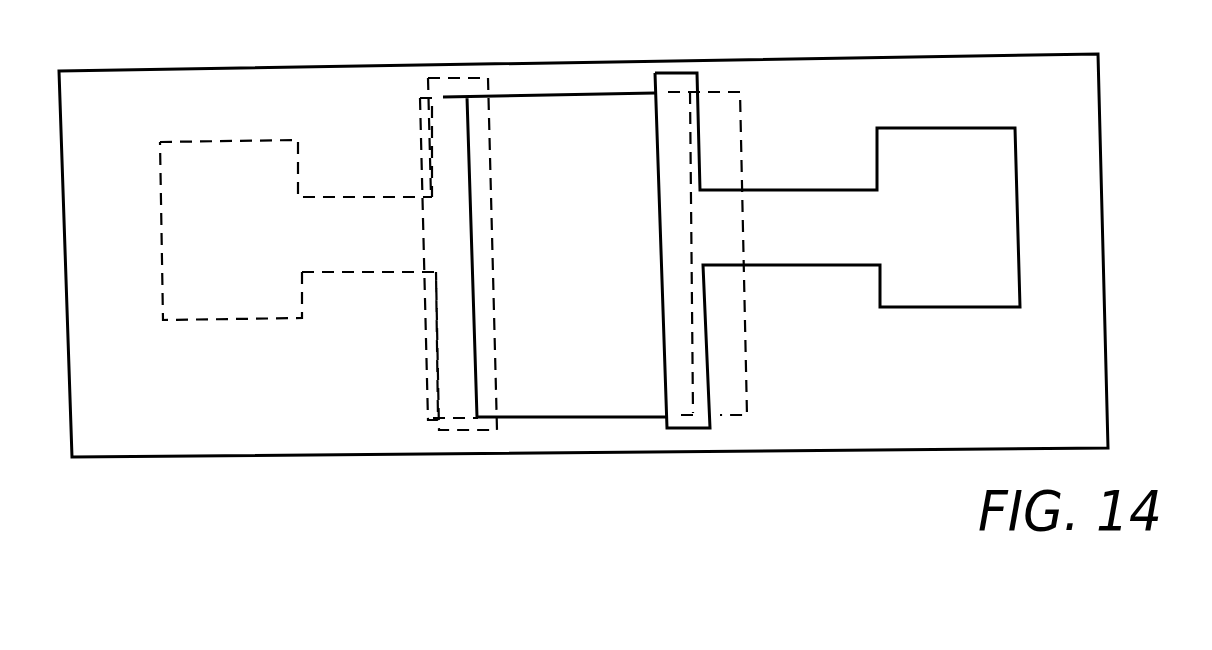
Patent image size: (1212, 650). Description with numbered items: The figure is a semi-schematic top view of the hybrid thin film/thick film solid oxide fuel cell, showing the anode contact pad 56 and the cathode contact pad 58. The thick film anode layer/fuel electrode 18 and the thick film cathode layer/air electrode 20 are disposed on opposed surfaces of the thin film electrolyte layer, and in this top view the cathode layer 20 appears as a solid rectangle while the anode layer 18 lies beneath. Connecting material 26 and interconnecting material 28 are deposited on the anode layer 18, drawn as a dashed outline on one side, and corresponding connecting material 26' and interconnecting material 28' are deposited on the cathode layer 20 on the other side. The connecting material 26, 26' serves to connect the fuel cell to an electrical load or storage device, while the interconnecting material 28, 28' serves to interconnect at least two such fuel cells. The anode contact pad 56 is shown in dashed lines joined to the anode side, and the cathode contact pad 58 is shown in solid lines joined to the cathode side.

The thick film anode layer/fuel electrode 18 is at (716, 96).
The thick film cathode layer/air electrode 20 is at (596, 290).
The connecting material 26 is at (372, 254).
The interconnecting material 28 is at (372, 254).
The connecting material 26' is at (792, 242).
The interconnecting material 28' is at (792, 242).
The anode contact pad 56 is at (268, 316).
The cathode contact pad 58 is at (985, 294).